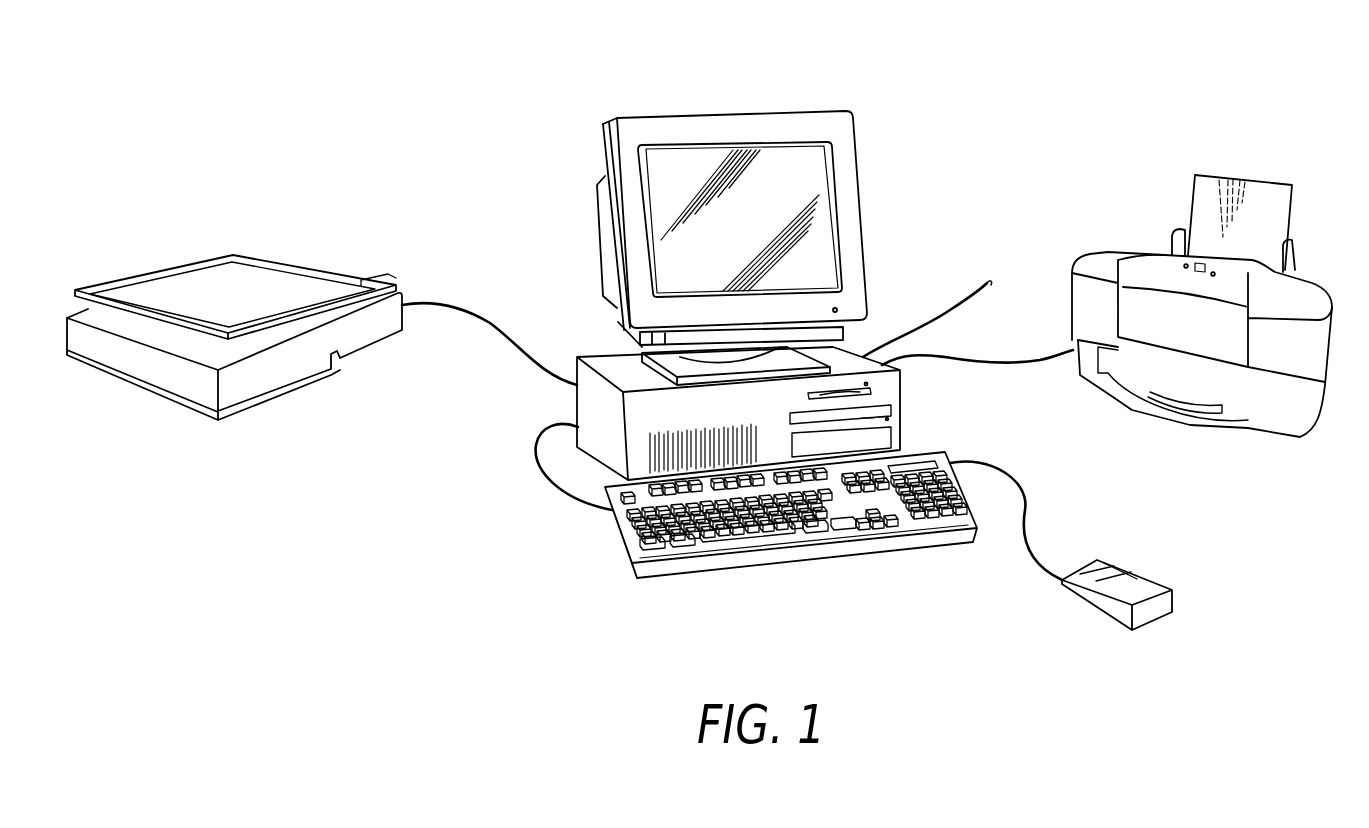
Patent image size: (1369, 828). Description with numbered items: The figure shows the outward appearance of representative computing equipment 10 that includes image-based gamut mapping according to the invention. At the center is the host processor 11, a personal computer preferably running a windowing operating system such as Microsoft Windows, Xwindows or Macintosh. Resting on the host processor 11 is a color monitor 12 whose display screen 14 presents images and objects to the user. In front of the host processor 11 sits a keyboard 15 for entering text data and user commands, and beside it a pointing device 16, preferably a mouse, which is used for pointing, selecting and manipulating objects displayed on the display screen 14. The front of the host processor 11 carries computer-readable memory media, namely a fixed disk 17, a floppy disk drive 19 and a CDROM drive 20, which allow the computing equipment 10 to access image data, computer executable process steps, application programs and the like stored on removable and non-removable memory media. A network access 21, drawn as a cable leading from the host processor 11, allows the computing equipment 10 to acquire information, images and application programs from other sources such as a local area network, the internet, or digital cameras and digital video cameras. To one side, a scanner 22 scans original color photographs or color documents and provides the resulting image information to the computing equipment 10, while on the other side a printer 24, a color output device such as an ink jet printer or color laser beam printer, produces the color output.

The computing equipment 10 is at (883, 104).
The host processor 11 is at (750, 394).
The color monitor 12 is at (758, 219).
The display screen 14 is at (818, 187).
The keyboard 15 is at (718, 548).
The pointing device 16 is at (1157, 612).
The fixed disk 17 is at (888, 438).
The floppy disk drive 19 is at (890, 408).
The CDROM drive 20 is at (873, 392).
The network access 21 is at (943, 320).
The scanner 22 is at (163, 270).
The printer 24 is at (1125, 203).